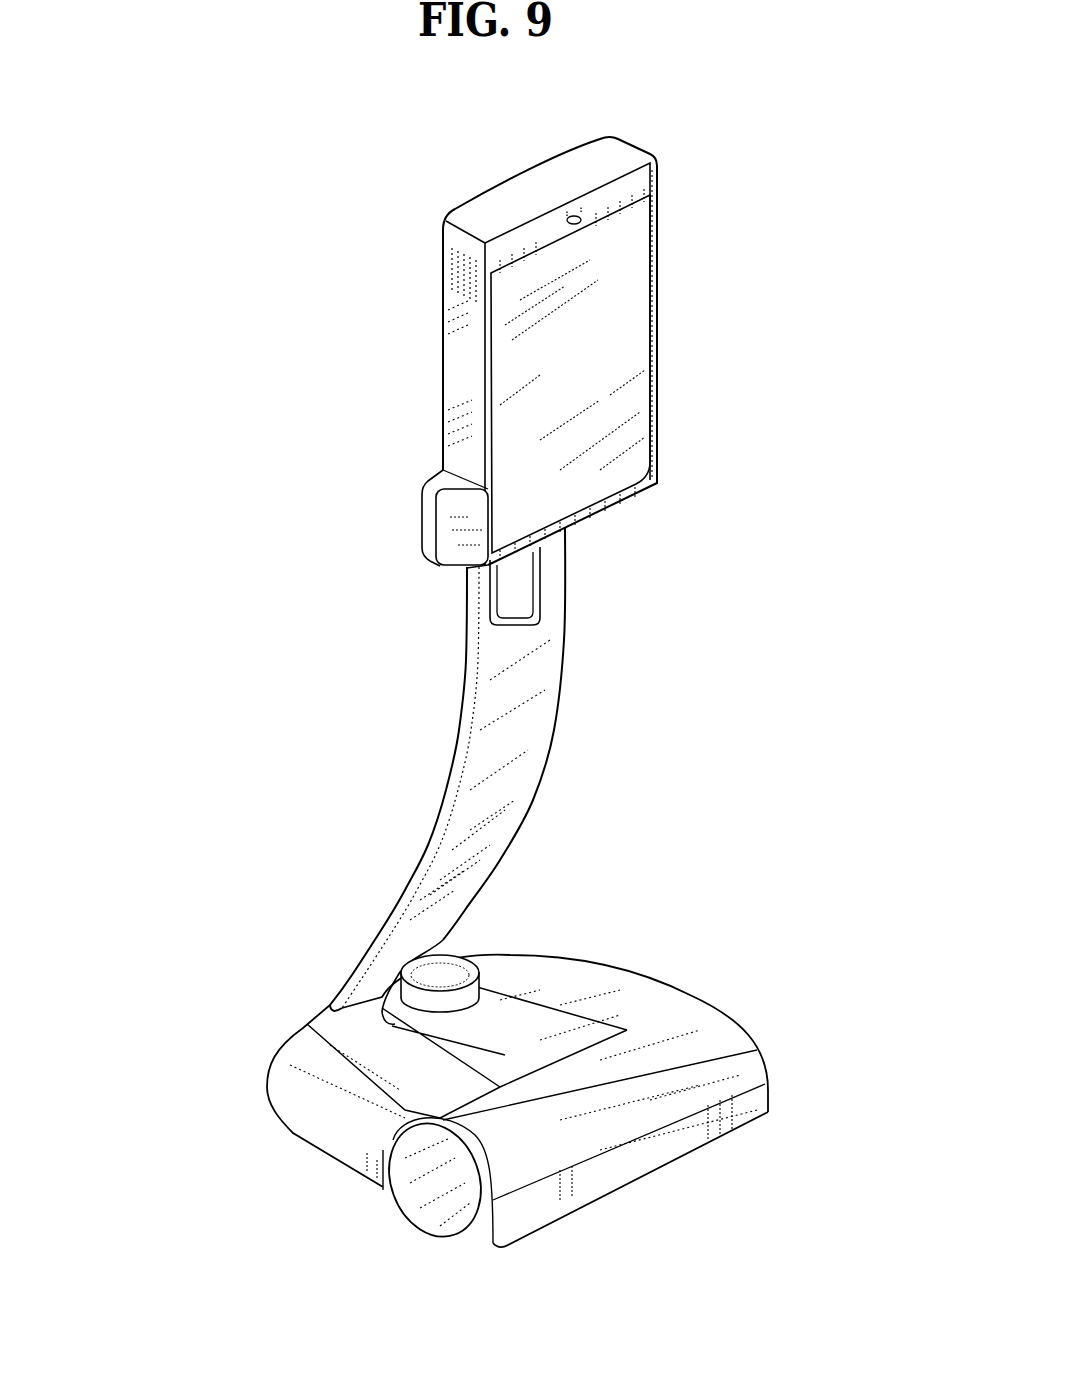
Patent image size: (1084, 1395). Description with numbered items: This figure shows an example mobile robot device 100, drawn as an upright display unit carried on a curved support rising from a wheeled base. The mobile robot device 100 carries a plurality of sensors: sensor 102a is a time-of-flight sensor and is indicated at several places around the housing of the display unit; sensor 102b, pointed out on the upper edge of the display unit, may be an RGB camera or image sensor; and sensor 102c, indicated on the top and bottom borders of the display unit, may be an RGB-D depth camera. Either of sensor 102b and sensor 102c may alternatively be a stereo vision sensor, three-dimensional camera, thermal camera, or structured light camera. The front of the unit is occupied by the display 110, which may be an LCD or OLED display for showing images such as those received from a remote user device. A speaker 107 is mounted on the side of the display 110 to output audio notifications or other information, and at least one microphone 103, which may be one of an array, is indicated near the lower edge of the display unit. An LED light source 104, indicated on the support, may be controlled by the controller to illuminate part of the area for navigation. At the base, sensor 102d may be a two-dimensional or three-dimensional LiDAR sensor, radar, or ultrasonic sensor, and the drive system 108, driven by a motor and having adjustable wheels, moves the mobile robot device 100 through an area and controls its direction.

The mobile robot device 100 is at (928, 41).
The sensor 102a is at (502, 250).
The sensor 102b is at (576, 218).
The sensor 102c is at (622, 484).
The sensor 102d is at (427, 968).
The microphone 103 is at (577, 518).
The LED light source 104 is at (538, 547).
The speaker 107 is at (473, 519).
The drive system 108 is at (442, 1207).
The display 110 is at (605, 340).